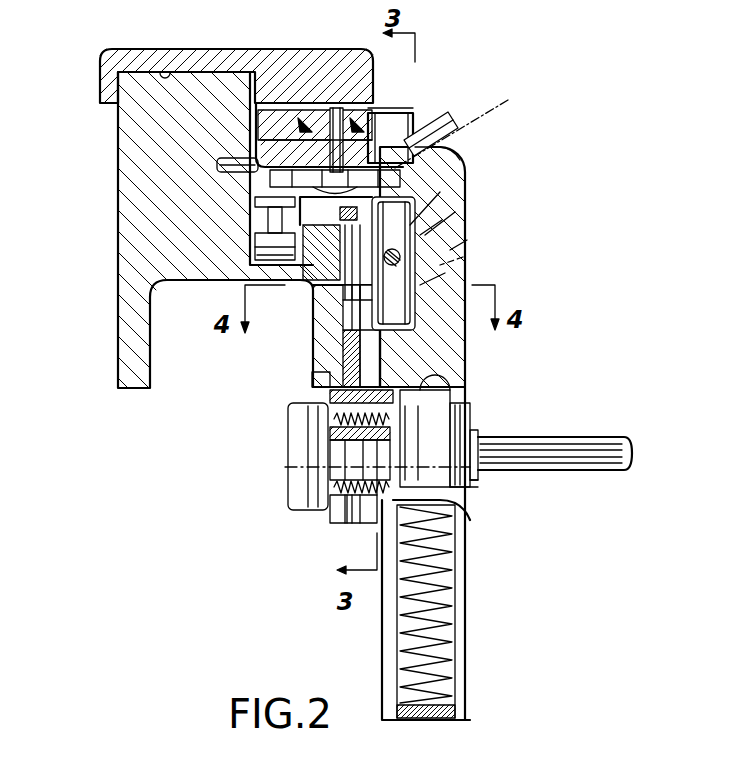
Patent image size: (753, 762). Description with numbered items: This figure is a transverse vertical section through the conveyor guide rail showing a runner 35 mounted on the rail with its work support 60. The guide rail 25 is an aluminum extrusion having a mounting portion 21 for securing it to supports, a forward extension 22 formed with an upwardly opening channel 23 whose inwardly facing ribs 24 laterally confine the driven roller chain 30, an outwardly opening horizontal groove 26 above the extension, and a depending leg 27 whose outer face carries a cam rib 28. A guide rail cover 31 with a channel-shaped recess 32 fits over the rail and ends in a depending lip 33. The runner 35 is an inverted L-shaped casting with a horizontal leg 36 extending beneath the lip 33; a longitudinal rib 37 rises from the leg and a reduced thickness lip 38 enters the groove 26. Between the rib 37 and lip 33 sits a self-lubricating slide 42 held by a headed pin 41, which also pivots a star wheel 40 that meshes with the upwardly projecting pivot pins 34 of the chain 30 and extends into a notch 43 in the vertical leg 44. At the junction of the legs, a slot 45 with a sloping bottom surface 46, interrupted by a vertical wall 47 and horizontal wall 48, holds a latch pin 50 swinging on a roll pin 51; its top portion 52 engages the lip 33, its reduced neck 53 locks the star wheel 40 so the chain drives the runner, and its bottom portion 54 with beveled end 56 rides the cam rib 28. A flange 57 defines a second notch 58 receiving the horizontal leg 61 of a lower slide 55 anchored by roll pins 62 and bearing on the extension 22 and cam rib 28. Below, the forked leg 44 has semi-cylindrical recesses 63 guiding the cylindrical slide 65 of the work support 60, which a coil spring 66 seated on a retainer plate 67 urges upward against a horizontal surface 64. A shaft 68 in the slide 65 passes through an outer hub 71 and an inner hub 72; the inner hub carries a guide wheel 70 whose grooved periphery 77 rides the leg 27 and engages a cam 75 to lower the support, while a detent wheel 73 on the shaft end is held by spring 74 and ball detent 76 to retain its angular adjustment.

The mounting portion 21 is at (184, 230).
The forward extension 22 is at (275, 329).
The upwardly opening channel or slot 23 is at (208, 297).
The inwardly extending ribs 24 is at (252, 264).
The guide rail 25 is at (68, 130).
The horizontal slot or groove 26 is at (284, 145).
The depending leg 27 is at (319, 345).
The cam rib 28 is at (321, 330).
The roller chain 30 is at (247, 239).
The guide rail cover 31 is at (236, 51).
The channel-shaped recess 32 is at (151, 45).
The depending lip 33 is at (414, 85).
The pivot pins 34 is at (304, 188).
The runner 35 is at (500, 237).
The horizontal leg 36 is at (434, 123).
The longitudinal rib 37 is at (315, 75).
The reduced thickness lip 38 is at (228, 135).
The star wheel 40 is at (462, 147).
The headed pin 41 is at (326, 90).
The slide 42 is at (384, 110).
The notch 43 is at (466, 199).
The vertical leg 44 is at (451, 433).
The upwardly and inwardly opening slot 45 is at (488, 174).
The bottom surface 46 is at (486, 210).
The vertical wall 47 is at (417, 263).
The horizontal wall 48 is at (502, 363).
The latch pin 50 is at (480, 133).
The roll pin 51 is at (337, 262).
The top portion 52 is at (467, 112).
The reduced neck 53 is at (468, 223).
The bottom portion 54 is at (444, 305).
The lower slide 55 is at (322, 252).
The beveled end 56 is at (290, 340).
The inward extension or flange 57 is at (336, 214).
The second notch 58 is at (484, 258).
The workpiece support 60 is at (501, 525).
The horizontal leg 61 is at (486, 280).
The roll pins 62 is at (318, 346).
The semi-cylindrical recess 63 is at (454, 610).
The horizontal surface 64 is at (463, 431).
The cylindrical slide 65 is at (492, 445).
The spring 66 is at (467, 605).
The retainer plate 67 is at (453, 725).
The shaft 68 is at (555, 476).
The guide wheel 70 is at (321, 537).
The outer hub 71 is at (518, 488).
The inner hub 72 is at (449, 527).
The detent wheel 73 is at (349, 456).
The spring 74 is at (320, 494).
The cam 75 is at (310, 399).
The ball detent 76 is at (308, 481).
The grooved periphery 77 is at (355, 528).